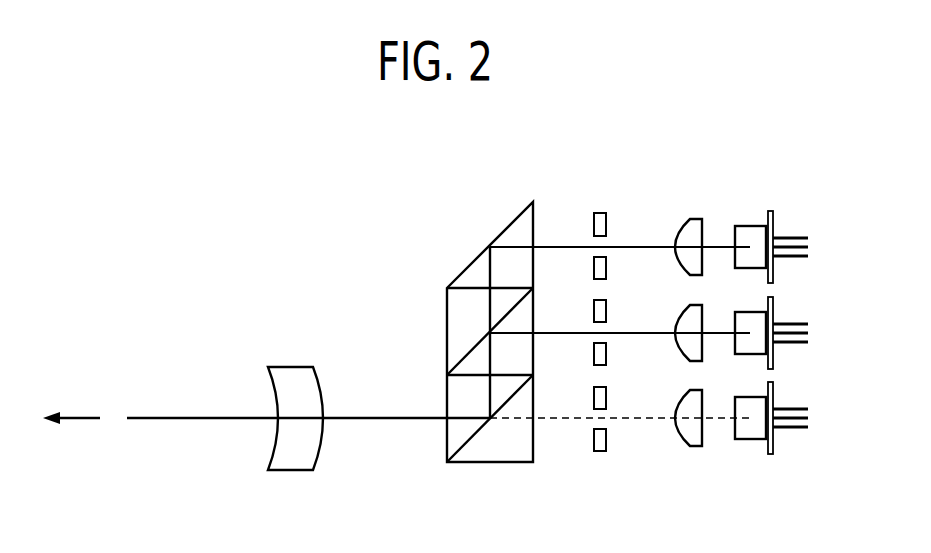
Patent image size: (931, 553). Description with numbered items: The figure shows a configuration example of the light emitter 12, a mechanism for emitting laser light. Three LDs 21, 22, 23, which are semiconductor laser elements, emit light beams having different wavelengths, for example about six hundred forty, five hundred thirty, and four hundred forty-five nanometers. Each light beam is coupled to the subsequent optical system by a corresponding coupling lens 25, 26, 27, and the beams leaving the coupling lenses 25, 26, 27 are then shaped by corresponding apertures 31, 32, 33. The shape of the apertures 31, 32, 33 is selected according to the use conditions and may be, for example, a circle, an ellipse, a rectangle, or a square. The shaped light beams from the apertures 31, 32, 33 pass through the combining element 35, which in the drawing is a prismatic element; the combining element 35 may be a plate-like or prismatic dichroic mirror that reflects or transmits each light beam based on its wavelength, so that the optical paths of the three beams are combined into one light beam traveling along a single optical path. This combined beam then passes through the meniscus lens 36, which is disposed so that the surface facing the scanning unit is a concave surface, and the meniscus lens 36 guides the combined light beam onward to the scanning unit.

The light emitter 12 is at (368, 165).
The LD 21 is at (750, 225).
The LD 22 is at (748, 311).
The LD 23 is at (752, 441).
The coupling lens 25 is at (690, 217).
The coupling lens 26 is at (690, 305).
The coupling lens 27 is at (690, 447).
The aperture 31 is at (593, 238).
The aperture 32 is at (594, 323).
The aperture 33 is at (594, 430).
The combining element 35 is at (500, 232).
The meniscus lens 36 is at (291, 367).